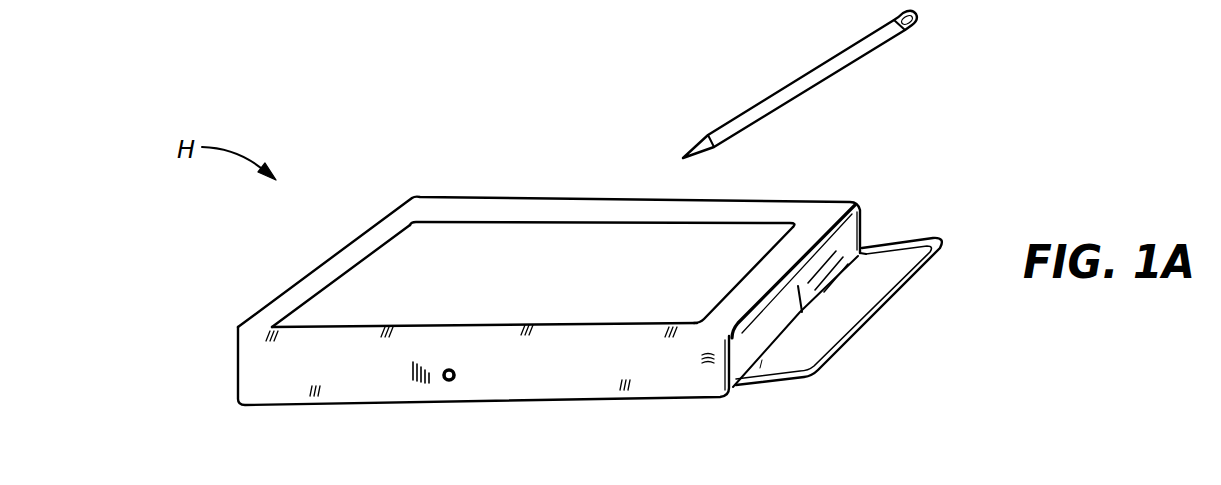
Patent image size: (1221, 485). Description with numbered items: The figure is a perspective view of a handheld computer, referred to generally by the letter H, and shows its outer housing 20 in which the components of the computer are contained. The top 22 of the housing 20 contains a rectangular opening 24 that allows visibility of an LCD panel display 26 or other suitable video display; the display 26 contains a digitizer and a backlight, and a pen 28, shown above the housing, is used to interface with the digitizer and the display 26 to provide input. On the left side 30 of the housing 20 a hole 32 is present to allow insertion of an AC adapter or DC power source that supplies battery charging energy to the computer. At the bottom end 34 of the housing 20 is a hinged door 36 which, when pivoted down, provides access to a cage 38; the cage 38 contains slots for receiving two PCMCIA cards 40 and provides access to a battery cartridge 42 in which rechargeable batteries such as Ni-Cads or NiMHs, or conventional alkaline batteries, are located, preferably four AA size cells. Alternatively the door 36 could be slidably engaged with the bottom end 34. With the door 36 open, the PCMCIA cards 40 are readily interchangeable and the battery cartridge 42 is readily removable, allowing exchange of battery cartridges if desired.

The outer housing 20 is at (384, 404).
The top of the housing 22 is at (337, 262).
The rectangular opening 24 is at (404, 226).
The LCD panel display 26 is at (551, 277).
The pen 28 is at (813, 82).
The left side of the housing 30 is at (597, 376).
The hole 32 is at (449, 381).
The bottom end of the housing 34 is at (862, 200).
The hinged door 36 is at (903, 285).
The cage 38 is at (866, 238).
The PCMCIA cards 40 is at (880, 228).
The battery cartridge 42 is at (745, 348).